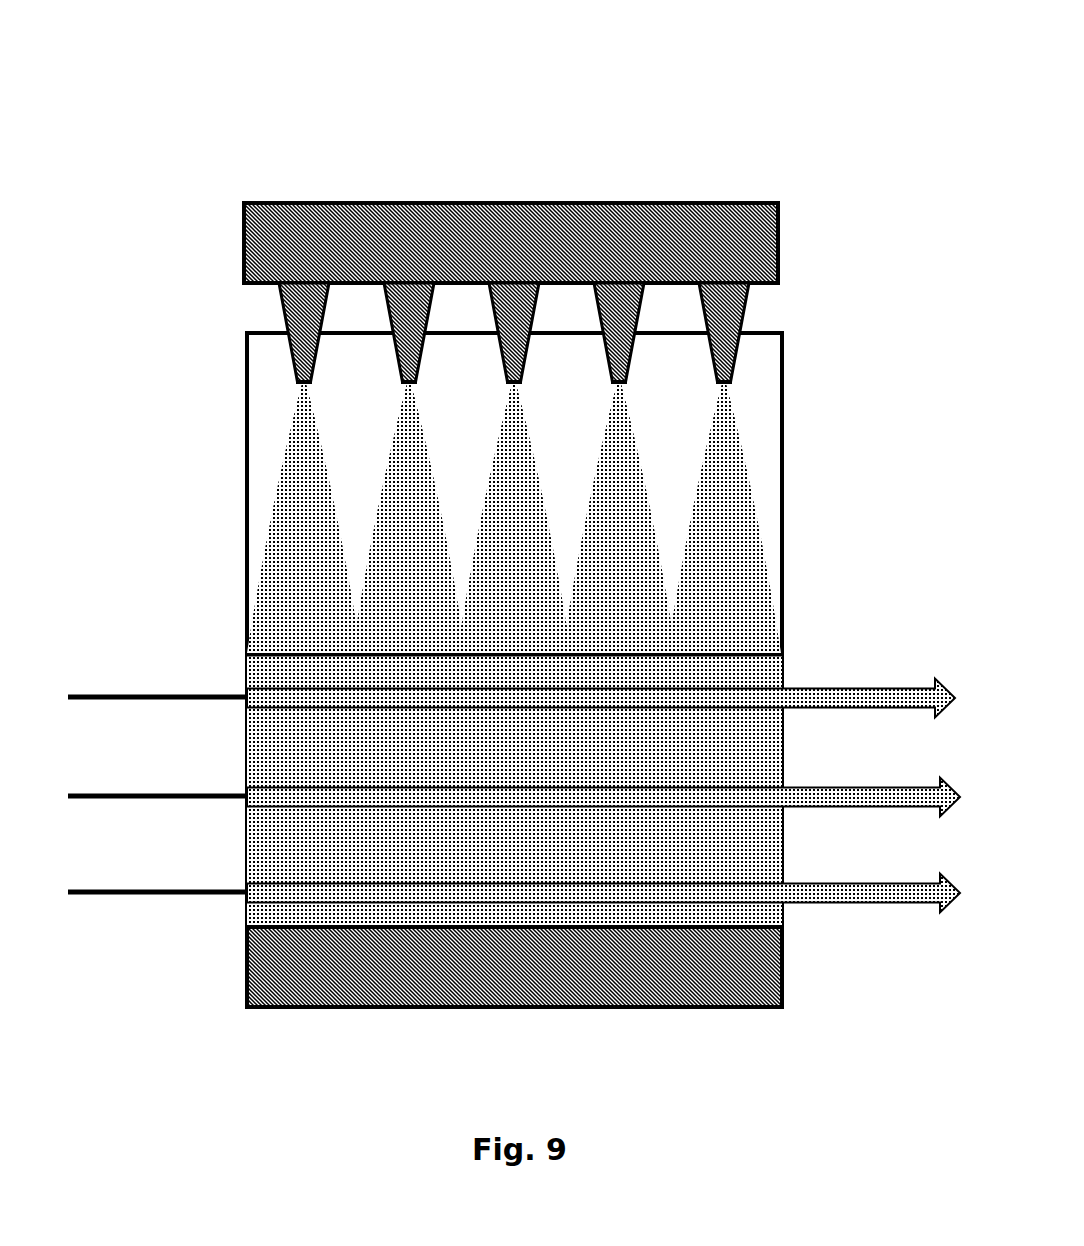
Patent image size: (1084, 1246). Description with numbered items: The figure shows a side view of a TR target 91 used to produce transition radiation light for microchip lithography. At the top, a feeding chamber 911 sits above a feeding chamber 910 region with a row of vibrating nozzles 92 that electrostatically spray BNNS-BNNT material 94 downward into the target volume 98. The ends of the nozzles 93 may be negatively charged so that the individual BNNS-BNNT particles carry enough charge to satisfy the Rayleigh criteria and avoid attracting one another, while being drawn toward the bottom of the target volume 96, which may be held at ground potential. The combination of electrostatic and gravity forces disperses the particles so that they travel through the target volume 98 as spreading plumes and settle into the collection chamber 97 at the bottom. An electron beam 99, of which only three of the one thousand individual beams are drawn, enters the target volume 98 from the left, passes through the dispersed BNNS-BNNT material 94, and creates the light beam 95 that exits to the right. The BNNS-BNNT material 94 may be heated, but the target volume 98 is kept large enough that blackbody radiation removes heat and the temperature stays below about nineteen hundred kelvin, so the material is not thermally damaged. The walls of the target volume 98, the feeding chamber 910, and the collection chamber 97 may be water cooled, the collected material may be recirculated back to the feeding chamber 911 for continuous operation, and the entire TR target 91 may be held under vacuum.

The TR target 91 is at (494, 220).
The feeding chamber 911 is at (242, 210).
The feeding chamber 910 is at (247, 365).
The vibrating nozzles 92 is at (747, 303).
The ends of the nozzles 93 is at (728, 378).
The BNNS-BNNT material 94 is at (733, 433).
The light beam 95 is at (878, 890).
The bottom of the target volume 96 is at (783, 928).
The collection chamber 97 is at (300, 997).
The target volume 98 is at (242, 925).
The electron beam 99 is at (160, 885).